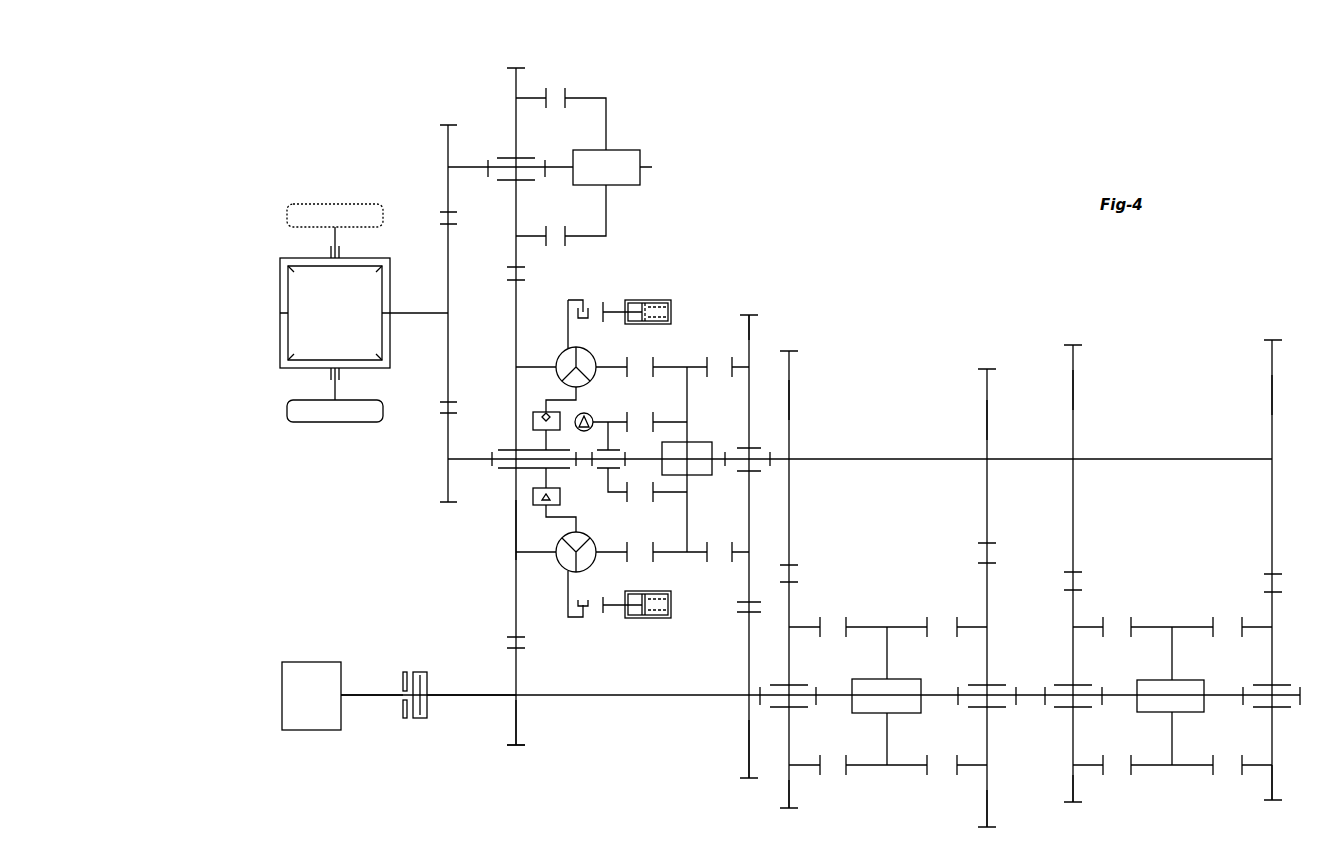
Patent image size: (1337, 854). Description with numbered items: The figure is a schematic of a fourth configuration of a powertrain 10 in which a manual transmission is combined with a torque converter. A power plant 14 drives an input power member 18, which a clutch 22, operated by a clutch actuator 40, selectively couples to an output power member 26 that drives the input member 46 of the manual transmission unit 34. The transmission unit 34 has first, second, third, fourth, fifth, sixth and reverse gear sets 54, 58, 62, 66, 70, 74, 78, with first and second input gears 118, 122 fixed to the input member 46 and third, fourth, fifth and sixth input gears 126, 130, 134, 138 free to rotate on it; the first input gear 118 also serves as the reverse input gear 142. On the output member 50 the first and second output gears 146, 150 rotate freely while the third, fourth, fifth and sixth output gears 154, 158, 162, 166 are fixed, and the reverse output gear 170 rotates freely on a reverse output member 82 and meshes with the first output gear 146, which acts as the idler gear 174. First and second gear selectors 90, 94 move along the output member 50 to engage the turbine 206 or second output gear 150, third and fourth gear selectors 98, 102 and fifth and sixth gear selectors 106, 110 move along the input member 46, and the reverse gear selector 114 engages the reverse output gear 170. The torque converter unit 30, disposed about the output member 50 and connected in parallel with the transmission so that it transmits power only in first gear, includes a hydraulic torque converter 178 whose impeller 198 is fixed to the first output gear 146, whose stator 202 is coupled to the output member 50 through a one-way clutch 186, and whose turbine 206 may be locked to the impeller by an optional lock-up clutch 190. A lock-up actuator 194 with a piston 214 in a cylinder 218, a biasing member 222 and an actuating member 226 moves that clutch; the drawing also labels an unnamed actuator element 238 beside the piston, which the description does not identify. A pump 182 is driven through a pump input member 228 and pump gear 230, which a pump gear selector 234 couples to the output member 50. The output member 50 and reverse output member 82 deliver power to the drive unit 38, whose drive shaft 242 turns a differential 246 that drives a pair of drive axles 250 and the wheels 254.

The powertrain 10 is at (234, 128).
The power plant 14 is at (312, 660).
The input power member 18 is at (372, 696).
The clutch 22 is at (420, 672).
The output power member 26 is at (440, 696).
The torque converter unit 30 is at (624, 662).
The manual transmission unit 34 is at (922, 184).
The drive unit 38 is at (240, 290).
The clutch actuator 40 is at (403, 680).
The input member 46 is at (660, 696).
The output member 50 is at (1150, 458).
The first gear set 54 is at (516, 752).
The second gear set 58 is at (748, 310).
The third gear set 62 is at (1073, 342).
The fourth gear set 66 is at (1271, 337).
The fifth gear set 70 is at (792, 350).
The sixth gear set 74 is at (986, 366).
The reverse gear set 78 is at (514, 64).
The reverse output member 82 is at (648, 165).
The first gear selector 90 is at (668, 370).
The second gear selector 94 is at (700, 370).
The third gear selector 98 is at (1142, 625).
The fourth gear selector 102 is at (1198, 625).
The fifth gear selector 106 is at (860, 625).
The sixth gear selector 110 is at (912, 625).
The reverse gear selector 114 is at (583, 98).
The first input gear 118 is at (516, 723).
The second input gear 122 is at (749, 740).
The third input gear 126 is at (1074, 788).
The fourth input gear 130 is at (1273, 780).
The fifth input gear 134 is at (790, 790).
The sixth input gear 138 is at (987, 807).
The reverse input gear 142 is at (516, 672).
The first output gear 146 is at (516, 525).
The second output gear 150 is at (750, 326).
The third output gear 154 is at (1074, 388).
The fourth output gear 158 is at (1272, 392).
The fifth output gear 162 is at (790, 400).
The sixth output gear 166 is at (987, 418).
The reverse output gear 170 is at (516, 80).
The idler gear 174 is at (516, 298).
The hydraulic torque converter 178 is at (556, 568).
The pump 182 is at (590, 414).
The one-way clutch 186 is at (533, 495).
The lock-up clutch 190 is at (576, 620).
The lock-up actuator 194 is at (650, 608).
The impeller 198 is at (556, 362).
The stator 202 is at (566, 386).
The turbine 206 is at (593, 352).
The piston 214 is at (645, 303).
The cylinder 218 is at (672, 312).
The biasing member 222 is at (658, 304).
The actuating member 226 is at (603, 303).
The pump input member 228 is at (620, 418).
The pump gear 230 is at (620, 498).
The pump gear selector 234 is at (672, 498).
The piston head 238 is at (638, 303).
The drive shaft 242 is at (418, 318).
The differential 246 is at (280, 332).
The drive axles 250 is at (330, 255).
The wheels 254 is at (335, 202).